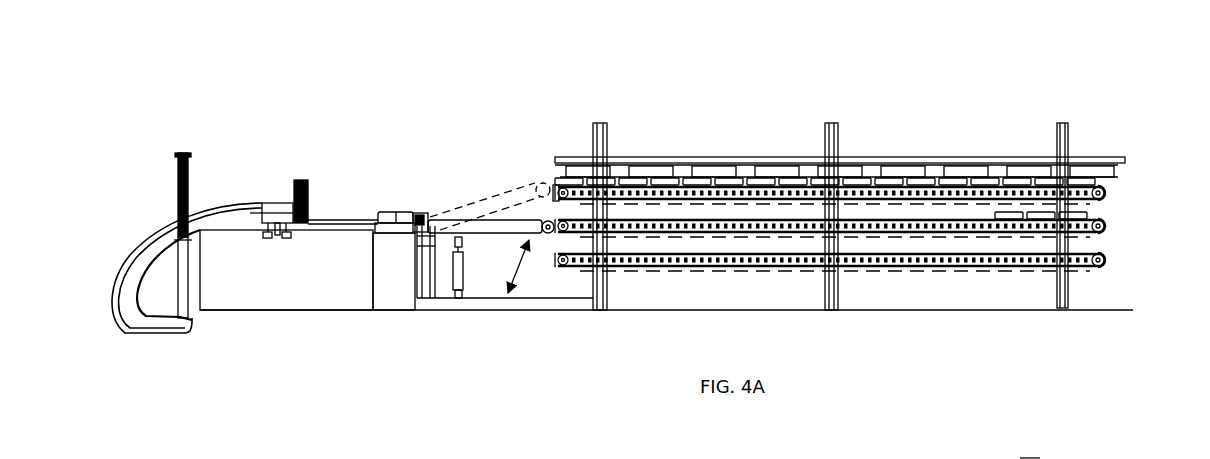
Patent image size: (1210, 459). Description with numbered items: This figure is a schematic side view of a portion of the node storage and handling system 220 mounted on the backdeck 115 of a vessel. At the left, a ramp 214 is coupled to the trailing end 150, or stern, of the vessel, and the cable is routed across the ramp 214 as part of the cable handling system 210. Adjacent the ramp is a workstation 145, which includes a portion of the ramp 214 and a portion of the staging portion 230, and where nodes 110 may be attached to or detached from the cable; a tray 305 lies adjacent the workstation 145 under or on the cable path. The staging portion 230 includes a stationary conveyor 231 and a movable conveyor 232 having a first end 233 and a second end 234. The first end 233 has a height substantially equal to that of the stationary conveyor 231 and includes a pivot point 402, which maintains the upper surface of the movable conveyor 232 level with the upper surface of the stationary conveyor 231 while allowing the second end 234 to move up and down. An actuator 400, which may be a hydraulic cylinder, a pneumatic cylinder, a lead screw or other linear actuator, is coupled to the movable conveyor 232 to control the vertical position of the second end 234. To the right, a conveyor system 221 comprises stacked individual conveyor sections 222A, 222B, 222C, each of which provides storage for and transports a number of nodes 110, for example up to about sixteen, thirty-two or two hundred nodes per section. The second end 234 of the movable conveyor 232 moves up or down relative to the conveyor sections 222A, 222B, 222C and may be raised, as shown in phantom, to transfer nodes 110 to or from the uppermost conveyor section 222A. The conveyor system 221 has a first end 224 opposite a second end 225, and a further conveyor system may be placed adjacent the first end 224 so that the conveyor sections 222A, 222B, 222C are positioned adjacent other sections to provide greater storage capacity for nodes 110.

The node 110 is at (396, 213).
The backdeck 115 is at (940, 312).
The workstation 145 is at (323, 192).
The trailing end 150 is at (227, 310).
The cable handling system 210 is at (1040, 458).
The ramp 214 is at (143, 235).
The node storage and handling system 220 is at (808, 104).
The conveyor system 221 is at (1066, 133).
The conveyor section 222A is at (1106, 193).
The conveyor section 222B is at (1106, 227).
The conveyor section 222C is at (1106, 261).
The first end 224 is at (1108, 187).
The second end 225 is at (549, 183).
The staging portion 230 is at (343, 324).
The stationary conveyor 231 is at (402, 235).
The movable conveyor 232 is at (470, 218).
The first end 233 is at (442, 252).
The second end 234 is at (544, 238).
The tray 305 is at (355, 220).
The actuator 400 is at (462, 274).
The pivot point 402 is at (445, 218).